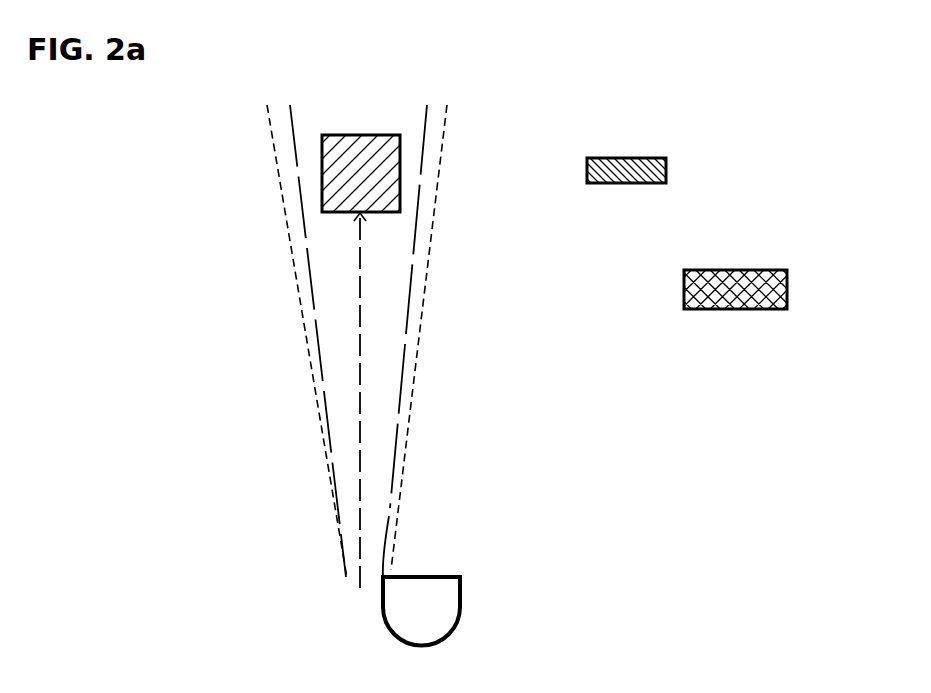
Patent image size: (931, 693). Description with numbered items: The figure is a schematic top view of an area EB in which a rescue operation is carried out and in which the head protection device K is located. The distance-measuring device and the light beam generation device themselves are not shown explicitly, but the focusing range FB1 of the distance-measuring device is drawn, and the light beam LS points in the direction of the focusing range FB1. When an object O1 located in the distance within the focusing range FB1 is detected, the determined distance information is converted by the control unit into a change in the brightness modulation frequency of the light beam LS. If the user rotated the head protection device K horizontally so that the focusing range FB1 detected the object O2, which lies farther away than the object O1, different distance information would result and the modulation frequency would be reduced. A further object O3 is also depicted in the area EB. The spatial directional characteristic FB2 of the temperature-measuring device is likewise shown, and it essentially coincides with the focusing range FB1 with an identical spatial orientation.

The area EB is at (203, 305).
The focusing range FB1 is at (422, 155).
The spatial directional characteristic FB2 is at (420, 322).
The light beam LS is at (361, 249).
The object O1 is at (361, 136).
The object O2 is at (628, 184).
The third object O3 is at (733, 310).
The head protection device K is at (461, 593).